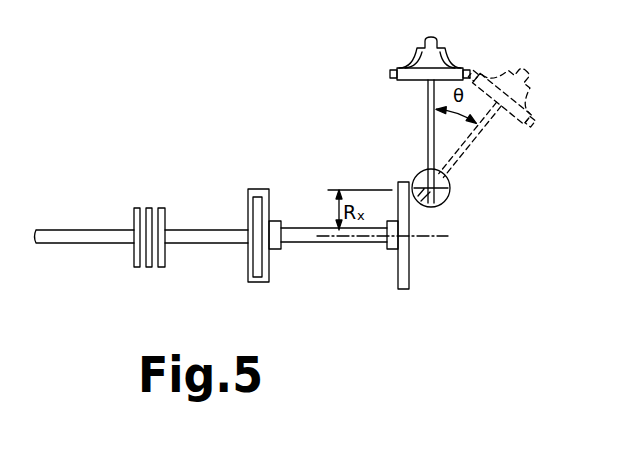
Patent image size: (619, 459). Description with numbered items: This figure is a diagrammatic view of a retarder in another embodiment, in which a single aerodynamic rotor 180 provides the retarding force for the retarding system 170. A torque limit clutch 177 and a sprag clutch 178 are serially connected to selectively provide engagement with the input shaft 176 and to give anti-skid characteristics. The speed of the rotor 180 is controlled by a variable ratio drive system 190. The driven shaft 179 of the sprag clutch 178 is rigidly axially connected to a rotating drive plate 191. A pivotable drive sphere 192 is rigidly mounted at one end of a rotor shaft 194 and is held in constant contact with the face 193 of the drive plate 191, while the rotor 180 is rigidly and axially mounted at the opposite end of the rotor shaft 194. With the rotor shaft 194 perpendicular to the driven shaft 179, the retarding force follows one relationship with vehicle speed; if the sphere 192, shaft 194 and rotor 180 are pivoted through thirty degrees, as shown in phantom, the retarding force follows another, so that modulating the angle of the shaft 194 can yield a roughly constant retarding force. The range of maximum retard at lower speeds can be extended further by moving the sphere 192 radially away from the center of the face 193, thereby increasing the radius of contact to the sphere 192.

The retarding system 170 is at (222, 153).
The input shaft 176 is at (101, 247).
The torque limit clutch 177 is at (165, 259).
The sprag clutch 178 is at (262, 282).
The driven shaft 179 is at (360, 243).
The aerodynamic rotor 180 is at (404, 62).
The variable ratio drive system 190 is at (453, 226).
The rotating drive plate 191 is at (391, 250).
The pivotable drive sphere 192 is at (450, 184).
The face of drive plate 193 is at (410, 285).
The rotor shaft 194 is at (427, 110).